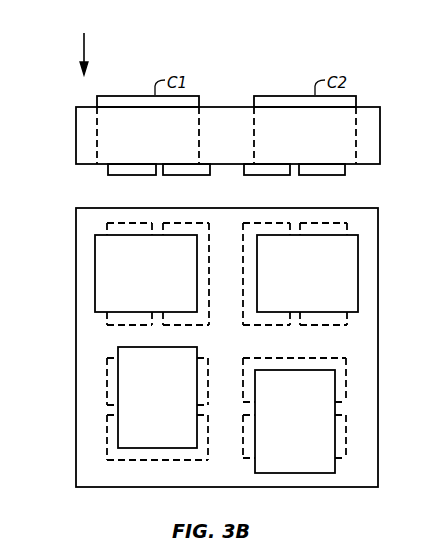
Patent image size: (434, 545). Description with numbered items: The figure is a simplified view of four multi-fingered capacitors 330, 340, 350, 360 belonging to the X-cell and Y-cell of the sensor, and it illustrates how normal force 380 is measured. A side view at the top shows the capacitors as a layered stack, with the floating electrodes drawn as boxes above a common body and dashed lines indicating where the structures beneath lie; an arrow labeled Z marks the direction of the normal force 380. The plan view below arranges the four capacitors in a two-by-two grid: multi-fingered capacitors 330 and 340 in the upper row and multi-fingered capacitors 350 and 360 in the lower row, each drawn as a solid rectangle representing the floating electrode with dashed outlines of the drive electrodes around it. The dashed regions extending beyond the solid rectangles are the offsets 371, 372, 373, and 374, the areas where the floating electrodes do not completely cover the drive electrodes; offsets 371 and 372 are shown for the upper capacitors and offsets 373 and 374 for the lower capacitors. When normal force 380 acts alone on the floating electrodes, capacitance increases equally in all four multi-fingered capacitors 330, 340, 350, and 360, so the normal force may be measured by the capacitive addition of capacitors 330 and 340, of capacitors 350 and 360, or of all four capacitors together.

The normal force 380 is at (75, 37).
The multi-fingered capacitor 330 is at (146, 273).
The multi-fingered capacitor 340 is at (307, 273).
The multi-fingered capacitor 350 is at (157, 397).
The multi-fingered capacitor 360 is at (295, 421).
The offset 371 is at (202, 243).
The offset 372 is at (250, 243).
The offset 373 is at (148, 455).
The offset 374 is at (303, 360).